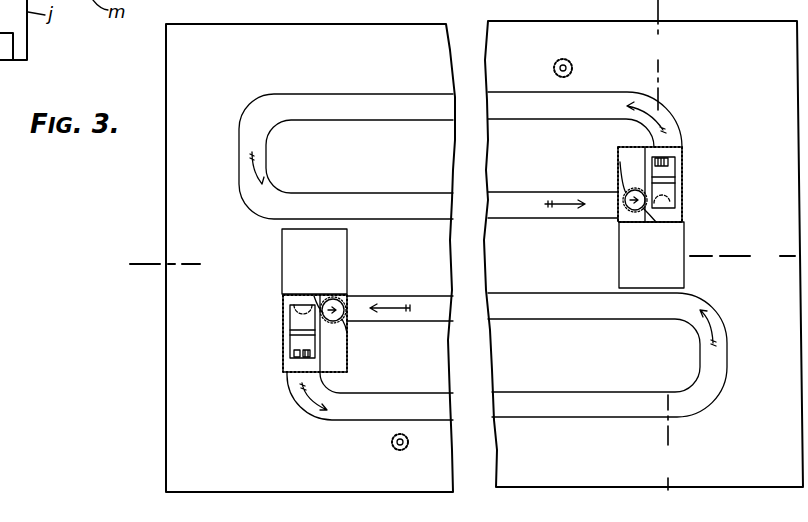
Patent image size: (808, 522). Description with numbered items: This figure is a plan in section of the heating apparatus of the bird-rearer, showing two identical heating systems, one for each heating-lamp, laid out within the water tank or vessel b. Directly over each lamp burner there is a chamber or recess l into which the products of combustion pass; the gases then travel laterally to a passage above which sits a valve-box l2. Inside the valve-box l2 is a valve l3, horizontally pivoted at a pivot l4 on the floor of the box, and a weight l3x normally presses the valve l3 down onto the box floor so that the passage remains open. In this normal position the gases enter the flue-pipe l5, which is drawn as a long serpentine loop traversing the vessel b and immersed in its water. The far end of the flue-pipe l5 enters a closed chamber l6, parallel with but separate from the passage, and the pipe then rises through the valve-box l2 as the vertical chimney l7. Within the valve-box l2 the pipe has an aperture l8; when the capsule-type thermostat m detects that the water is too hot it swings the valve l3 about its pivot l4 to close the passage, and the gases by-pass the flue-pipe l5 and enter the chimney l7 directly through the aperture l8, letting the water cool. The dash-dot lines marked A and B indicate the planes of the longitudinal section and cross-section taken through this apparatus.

The chamber or recess l is at (305, 262).
The valve-box l2 is at (348, 300).
The valve l3 is at (290, 320).
The pivot l4 is at (295, 338).
The weight l3x is at (289, 361).
The flue-pipe l5 is at (355, 205).
The closed chamber l6 is at (335, 352).
The chimney l7 is at (332, 296).
The aperture l8 is at (318, 295).
The thermostat m is at (408, 447).
The water tank or vessel b is at (484, 256).
The section line A A is at (450, 259).
The section line B B is at (663, 245).